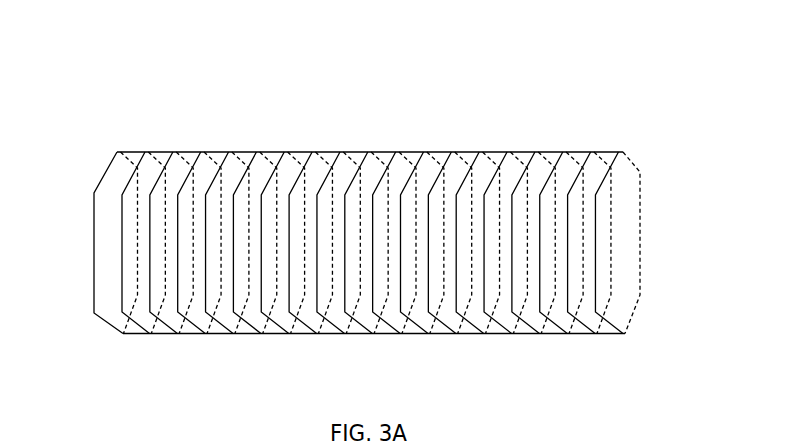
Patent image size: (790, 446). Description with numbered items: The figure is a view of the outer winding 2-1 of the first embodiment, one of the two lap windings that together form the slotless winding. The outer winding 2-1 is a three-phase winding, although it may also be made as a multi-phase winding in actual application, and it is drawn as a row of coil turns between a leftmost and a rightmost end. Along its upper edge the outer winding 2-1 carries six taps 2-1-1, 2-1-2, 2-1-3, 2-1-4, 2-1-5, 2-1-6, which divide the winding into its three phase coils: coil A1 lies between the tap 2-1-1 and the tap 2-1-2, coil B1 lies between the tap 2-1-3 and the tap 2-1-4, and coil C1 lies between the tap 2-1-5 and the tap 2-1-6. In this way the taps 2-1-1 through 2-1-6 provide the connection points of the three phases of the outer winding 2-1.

The outer winding 2-1 is at (362, 277).
The tap 2-1-1 is at (117, 152).
The tap 2-1-2 is at (284, 152).
The tap 2-1-3 is at (284, 98).
The tap 2-1-4 is at (452, 152).
The tap 2-1-5 is at (452, 98).
The tap 2-1-6 is at (619, 152).